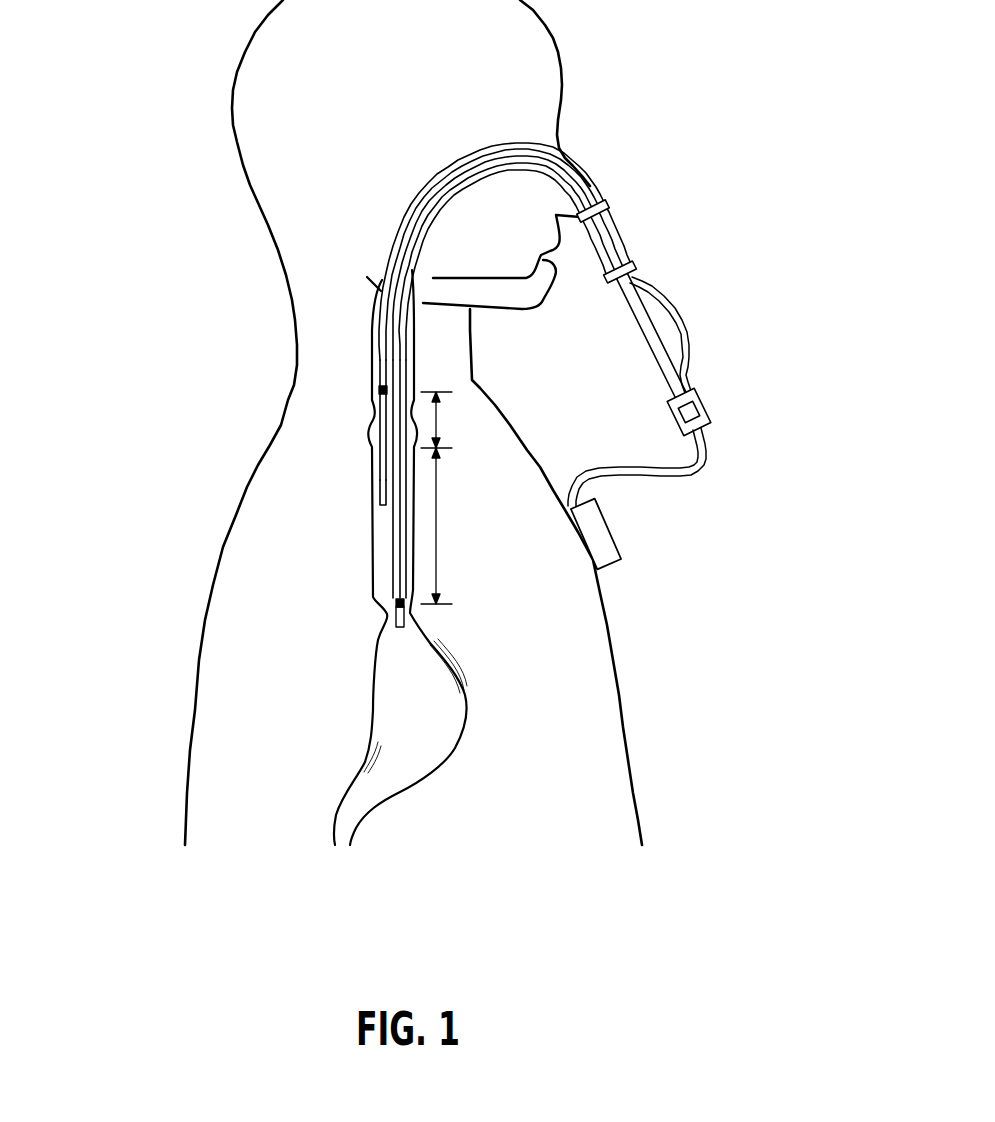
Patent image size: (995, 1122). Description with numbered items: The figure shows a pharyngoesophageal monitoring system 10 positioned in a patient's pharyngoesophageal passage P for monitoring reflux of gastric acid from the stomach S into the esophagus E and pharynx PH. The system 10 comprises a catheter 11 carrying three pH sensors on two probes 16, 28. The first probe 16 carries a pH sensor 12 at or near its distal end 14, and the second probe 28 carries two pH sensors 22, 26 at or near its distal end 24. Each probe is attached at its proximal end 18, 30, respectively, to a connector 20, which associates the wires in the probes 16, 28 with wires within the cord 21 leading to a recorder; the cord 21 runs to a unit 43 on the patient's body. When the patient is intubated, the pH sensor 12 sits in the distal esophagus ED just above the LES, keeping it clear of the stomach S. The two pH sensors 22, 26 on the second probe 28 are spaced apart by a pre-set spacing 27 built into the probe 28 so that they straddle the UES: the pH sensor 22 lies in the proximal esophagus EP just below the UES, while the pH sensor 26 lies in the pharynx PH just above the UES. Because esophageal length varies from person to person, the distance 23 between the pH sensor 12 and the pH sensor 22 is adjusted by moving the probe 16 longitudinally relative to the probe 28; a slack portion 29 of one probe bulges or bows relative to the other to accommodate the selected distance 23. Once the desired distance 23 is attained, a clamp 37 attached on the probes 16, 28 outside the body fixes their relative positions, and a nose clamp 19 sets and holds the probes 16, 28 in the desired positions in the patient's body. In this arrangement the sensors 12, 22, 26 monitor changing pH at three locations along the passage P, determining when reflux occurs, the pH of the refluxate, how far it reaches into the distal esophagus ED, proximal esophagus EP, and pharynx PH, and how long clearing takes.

The pharyngoesophageal monitoring system 10 is at (494, 370).
The catheter 11 is at (627, 209).
The pH sensor 12 is at (396, 603).
The distal end of probe 14 is at (410, 612).
The first probe 16 is at (410, 341).
The proximal end of probe 18 is at (669, 402).
The nose clamp 19 is at (606, 209).
The connector 20 is at (707, 394).
The cord 21 is at (688, 473).
The pH sensor 22 is at (377, 450).
The distance between pH sensors 23 is at (438, 513).
The distal end of probe 24 is at (379, 490).
The pH sensor 26 is at (379, 390).
The spacing between pH sensors 27 is at (438, 418).
The second probe 28 is at (377, 315).
The slack portion 29 is at (669, 301).
The proximal end of probe 30 is at (691, 378).
The clamp 37 is at (634, 267).
The recorder unit 43 is at (622, 548).
The pharyngoesophageal passage P is at (162, 392).
The pharynx PH is at (354, 346).
The upper esophageal sphincter UES is at (360, 417).
The proximal esophagus EP is at (368, 441).
The esophagus E is at (359, 533).
The distal esophagus ED is at (370, 574).
The lower esophageal sphincter LES is at (373, 620).
The stomach S is at (478, 705).